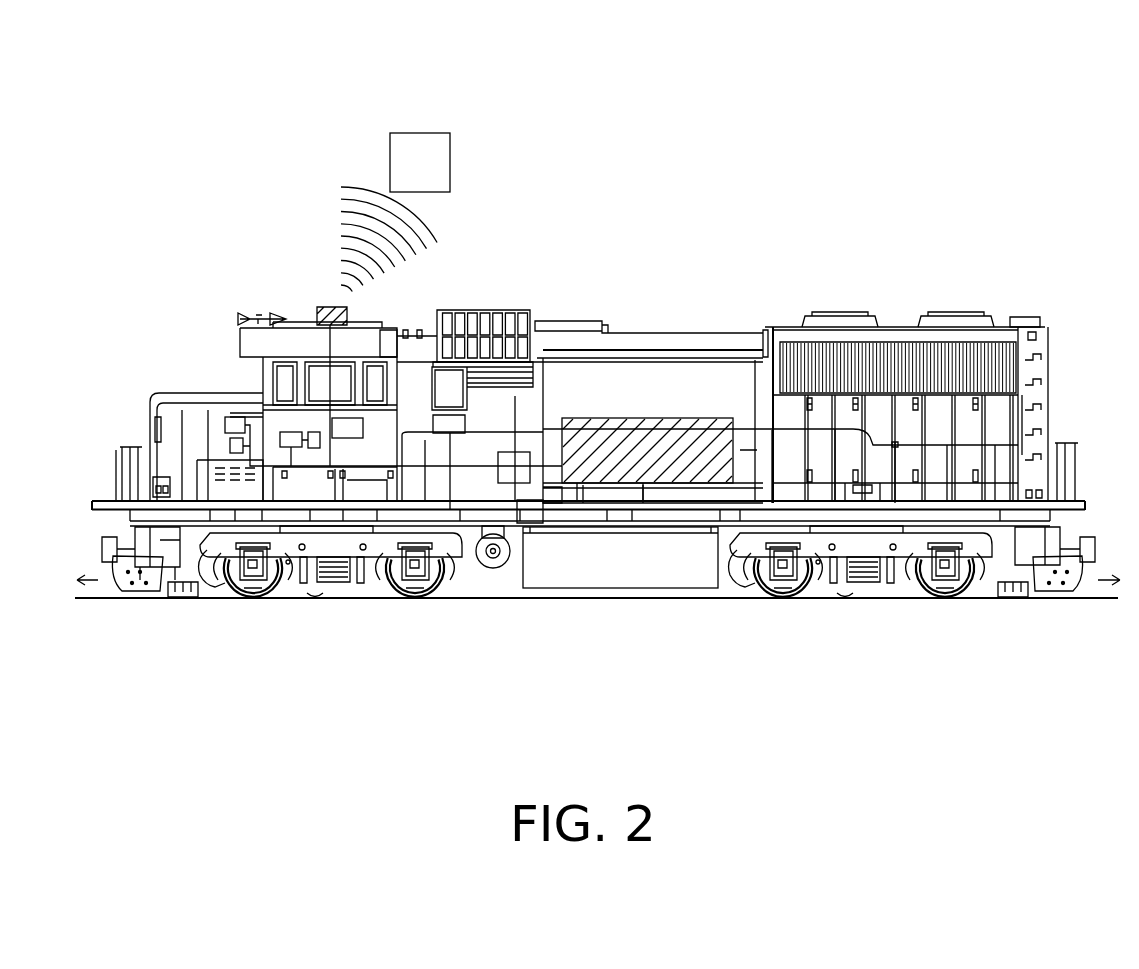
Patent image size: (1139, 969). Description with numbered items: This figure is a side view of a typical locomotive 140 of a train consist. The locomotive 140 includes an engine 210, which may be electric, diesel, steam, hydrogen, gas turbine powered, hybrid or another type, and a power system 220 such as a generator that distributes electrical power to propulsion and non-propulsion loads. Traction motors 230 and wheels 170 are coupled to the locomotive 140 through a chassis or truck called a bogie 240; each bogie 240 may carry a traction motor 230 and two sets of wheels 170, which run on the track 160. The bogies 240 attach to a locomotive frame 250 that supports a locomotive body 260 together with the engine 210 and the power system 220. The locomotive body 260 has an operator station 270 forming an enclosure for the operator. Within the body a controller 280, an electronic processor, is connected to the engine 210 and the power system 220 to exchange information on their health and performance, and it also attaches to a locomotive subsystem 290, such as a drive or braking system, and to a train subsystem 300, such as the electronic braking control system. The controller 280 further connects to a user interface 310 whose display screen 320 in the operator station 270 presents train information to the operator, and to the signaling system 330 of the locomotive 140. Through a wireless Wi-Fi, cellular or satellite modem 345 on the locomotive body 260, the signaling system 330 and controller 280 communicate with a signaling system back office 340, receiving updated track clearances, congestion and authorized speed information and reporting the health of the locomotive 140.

The locomotive 140 is at (880, 131).
The track 160 is at (698, 600).
The wheels 170 is at (240, 597).
The engine 210 is at (1017, 377).
The power system 220 is at (650, 418).
The traction motors 230 is at (317, 600).
The bogie 240 is at (220, 604).
The locomotive frame 250 is at (458, 522).
The locomotive body 260 is at (779, 328).
The operator station 270 is at (297, 342).
The controller 280 is at (520, 452).
The locomotive subsystem 290 is at (230, 447).
The train subsystem 300 is at (225, 425).
The user interface 310 is at (282, 437).
The display screen 320 is at (314, 432).
The signaling system 330 is at (365, 428).
The signaling system back office 340 is at (420, 162).
The wireless modem 345 is at (330, 307).